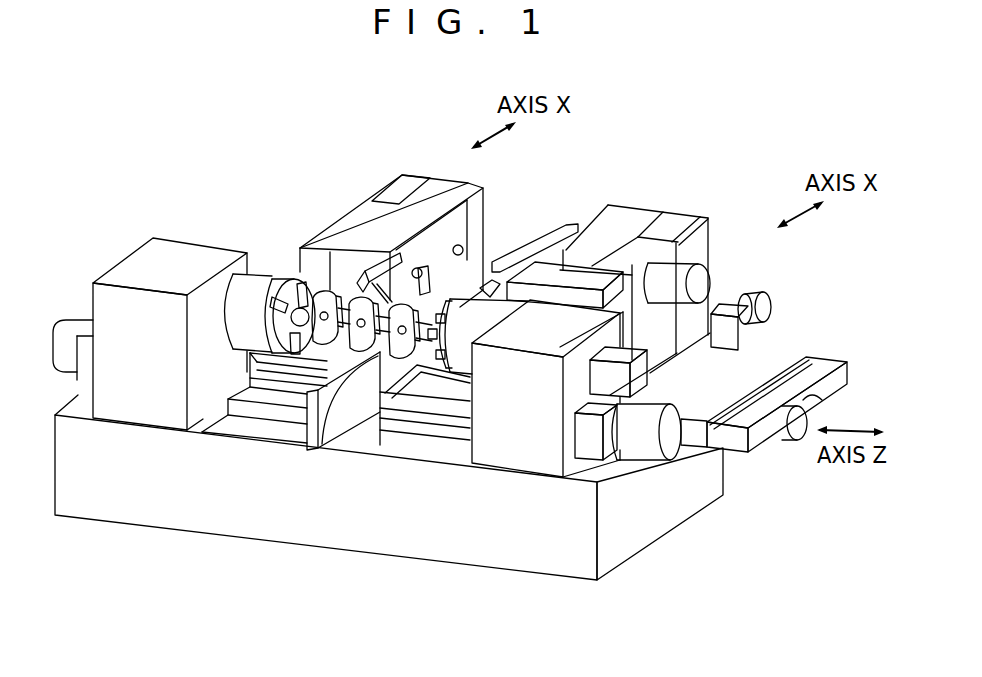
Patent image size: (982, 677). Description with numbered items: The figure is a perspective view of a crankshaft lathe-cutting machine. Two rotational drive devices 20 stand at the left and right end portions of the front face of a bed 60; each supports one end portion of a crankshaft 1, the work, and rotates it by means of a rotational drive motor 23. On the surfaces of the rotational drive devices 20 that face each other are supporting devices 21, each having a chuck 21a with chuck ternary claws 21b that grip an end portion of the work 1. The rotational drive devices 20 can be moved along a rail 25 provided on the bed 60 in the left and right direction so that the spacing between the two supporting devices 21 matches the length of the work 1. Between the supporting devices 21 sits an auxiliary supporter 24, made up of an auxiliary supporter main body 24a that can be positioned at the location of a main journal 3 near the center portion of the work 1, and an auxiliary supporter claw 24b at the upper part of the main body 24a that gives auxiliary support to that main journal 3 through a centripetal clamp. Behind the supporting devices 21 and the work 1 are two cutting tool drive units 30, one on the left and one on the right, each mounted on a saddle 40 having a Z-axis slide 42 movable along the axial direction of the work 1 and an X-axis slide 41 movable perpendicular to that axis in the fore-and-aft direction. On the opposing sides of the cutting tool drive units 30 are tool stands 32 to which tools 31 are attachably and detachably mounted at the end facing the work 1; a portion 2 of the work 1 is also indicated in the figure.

The crankshaft (work) 1 is at (309, 276).
The machined portion of workpiece 2 is at (313, 274).
The main journal 3 is at (307, 440).
The rotational drive device 20 is at (128, 276).
The supporting device 21 is at (522, 446).
The chuck 21a is at (248, 292).
The chuck ternary claws 21b is at (287, 278).
The rotational drive motor 23 is at (63, 320).
The auxiliary supporter 24 is at (406, 455).
The auxiliary supporter main body 24a is at (356, 423).
The auxiliary supporter claw 24b is at (397, 374).
The rail 25 is at (262, 432).
The cutting tool drive unit 30 is at (450, 178).
The tool 31 is at (369, 276).
The tool stand 32 is at (467, 222).
The saddle 40 is at (782, 357).
The X-axis slide 41 is at (755, 303).
The Z-axis slide 42 is at (767, 357).
The bed 60 is at (155, 507).